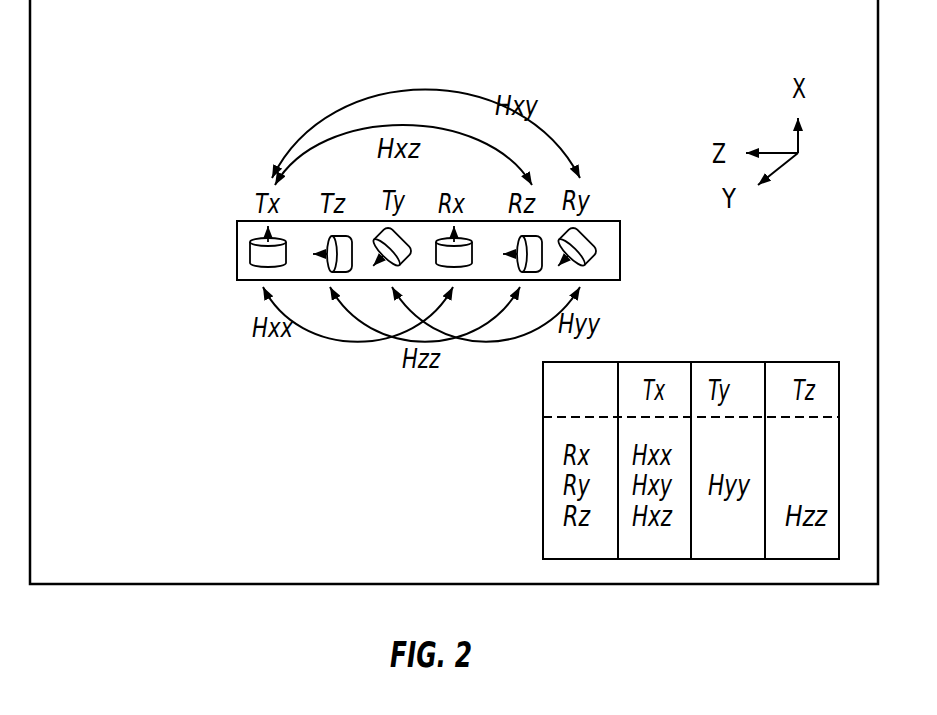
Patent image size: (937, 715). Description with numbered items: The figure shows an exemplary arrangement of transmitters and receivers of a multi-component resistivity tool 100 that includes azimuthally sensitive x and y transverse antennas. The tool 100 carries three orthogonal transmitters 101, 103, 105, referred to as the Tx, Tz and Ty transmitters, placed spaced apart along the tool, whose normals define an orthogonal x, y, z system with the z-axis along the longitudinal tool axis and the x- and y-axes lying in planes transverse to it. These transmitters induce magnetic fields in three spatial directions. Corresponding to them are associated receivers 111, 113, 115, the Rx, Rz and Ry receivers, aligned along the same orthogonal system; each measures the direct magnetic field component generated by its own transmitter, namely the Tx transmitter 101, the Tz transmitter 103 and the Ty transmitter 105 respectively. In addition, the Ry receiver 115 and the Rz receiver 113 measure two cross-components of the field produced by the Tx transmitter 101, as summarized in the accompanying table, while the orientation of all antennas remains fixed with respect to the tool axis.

The multi-component resistivity tool 100 is at (195, 132).
The Tx transmitter 101 is at (263, 253).
The Tz transmitter 103 is at (347, 268).
The Ty transmitter 105 is at (388, 262).
The Rx receiver 111 is at (466, 240).
The Rz receiver 113 is at (533, 237).
The Ry receiver 115 is at (587, 237).